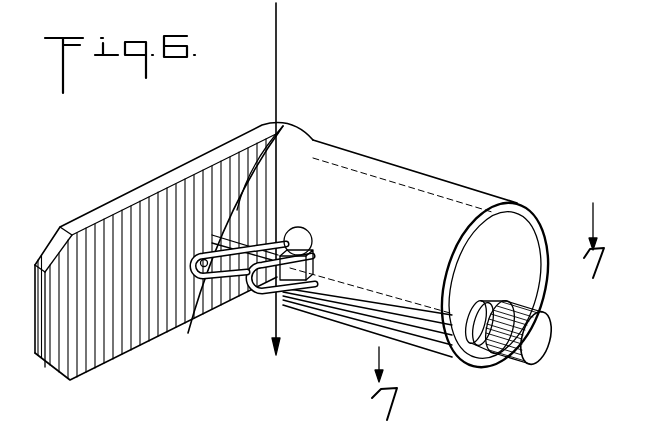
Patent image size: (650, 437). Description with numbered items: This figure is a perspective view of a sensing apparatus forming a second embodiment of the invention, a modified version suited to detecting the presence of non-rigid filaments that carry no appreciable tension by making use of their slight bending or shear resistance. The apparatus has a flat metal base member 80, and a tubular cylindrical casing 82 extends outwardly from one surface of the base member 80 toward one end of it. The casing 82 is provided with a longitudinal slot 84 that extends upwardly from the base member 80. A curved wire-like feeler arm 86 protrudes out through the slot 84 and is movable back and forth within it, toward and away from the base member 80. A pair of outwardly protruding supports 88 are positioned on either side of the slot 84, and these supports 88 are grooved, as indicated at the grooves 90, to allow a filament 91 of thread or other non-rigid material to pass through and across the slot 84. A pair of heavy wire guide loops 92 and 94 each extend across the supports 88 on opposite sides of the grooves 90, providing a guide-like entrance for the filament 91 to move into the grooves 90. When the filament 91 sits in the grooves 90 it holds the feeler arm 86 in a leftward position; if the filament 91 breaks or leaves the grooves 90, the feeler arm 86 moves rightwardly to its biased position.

The base member 80 is at (90, 212).
The casing 82 is at (430, 182).
The longitudinal slot 84 is at (248, 218).
The feeler arm 86 is at (246, 250).
The supports 88 is at (310, 281).
The grooves 90 is at (286, 224).
The filament 91 is at (278, 92).
The wire guide loop 92 is at (188, 249).
The wire guide loop 94 is at (266, 286).